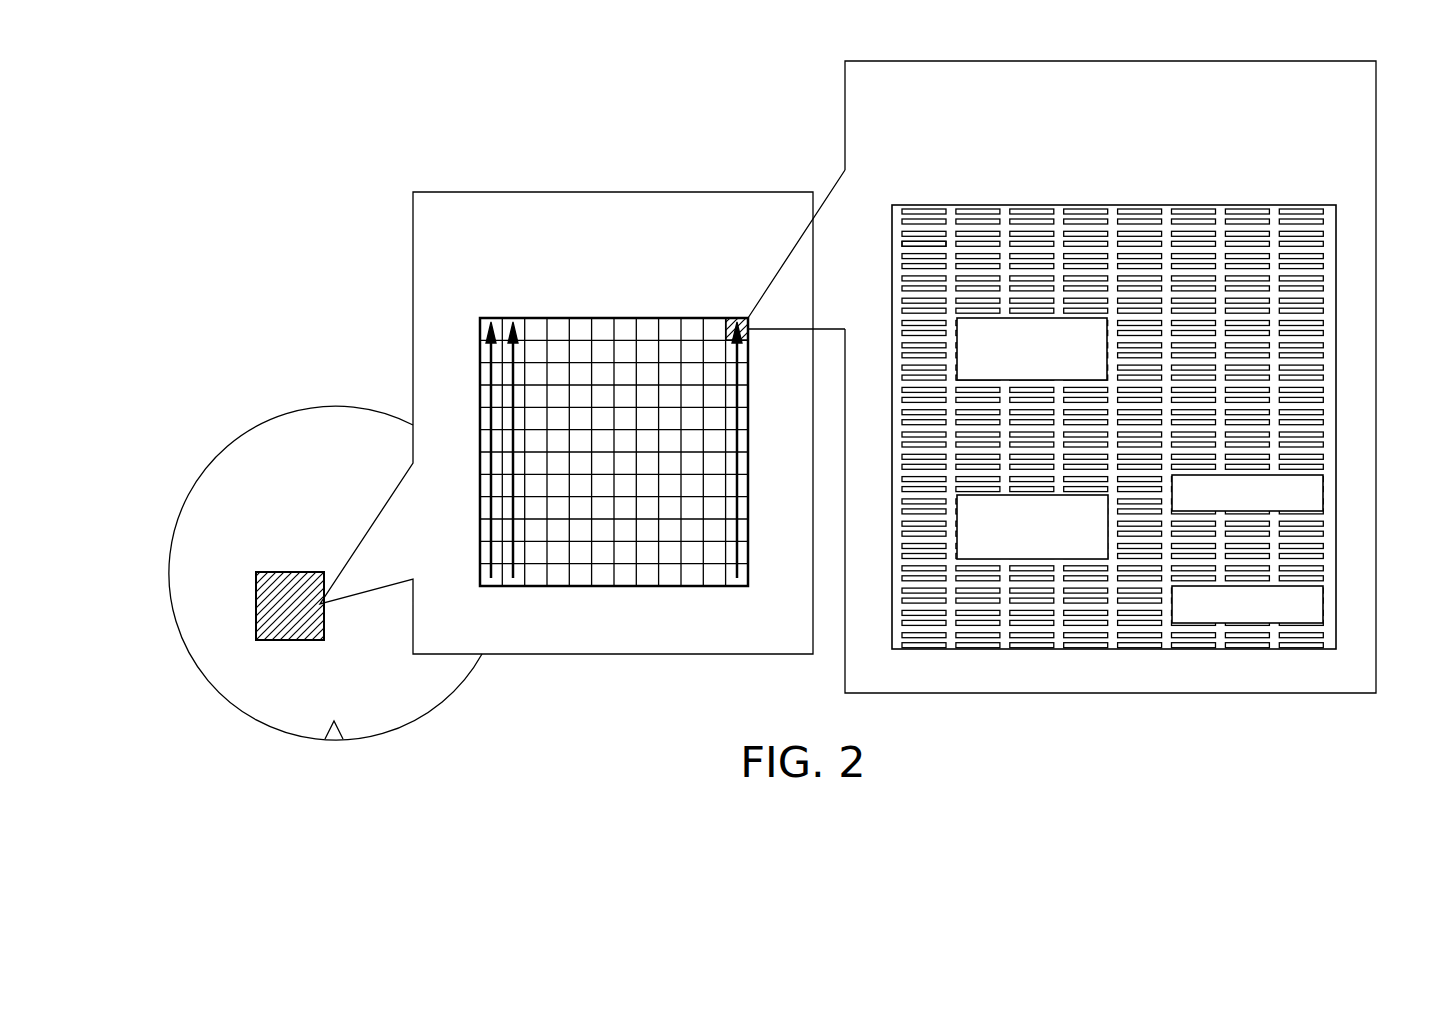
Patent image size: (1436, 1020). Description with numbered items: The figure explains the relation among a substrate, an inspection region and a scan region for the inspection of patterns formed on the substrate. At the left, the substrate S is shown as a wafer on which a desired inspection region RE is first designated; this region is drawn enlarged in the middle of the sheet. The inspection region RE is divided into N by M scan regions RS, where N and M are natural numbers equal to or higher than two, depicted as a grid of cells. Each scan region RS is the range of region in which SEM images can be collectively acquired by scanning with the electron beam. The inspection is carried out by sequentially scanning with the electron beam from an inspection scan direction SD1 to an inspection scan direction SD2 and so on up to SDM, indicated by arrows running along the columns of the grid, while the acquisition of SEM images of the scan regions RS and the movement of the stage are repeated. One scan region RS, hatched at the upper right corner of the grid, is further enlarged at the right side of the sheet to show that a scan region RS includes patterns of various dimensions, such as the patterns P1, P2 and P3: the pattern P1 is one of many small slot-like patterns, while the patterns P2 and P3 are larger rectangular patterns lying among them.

The substrate S is at (333, 418).
The inspection region RE is at (295, 572).
The scan region RS is at (728, 318).
The inspection scan direction SD1 is at (484, 587).
The inspection scan direction SD2 is at (508, 587).
The inspection scan direction SDM is at (730, 587).
The pattern P1 is at (928, 242).
The pattern P2 is at (1312, 489).
The pattern P3 is at (1030, 330).